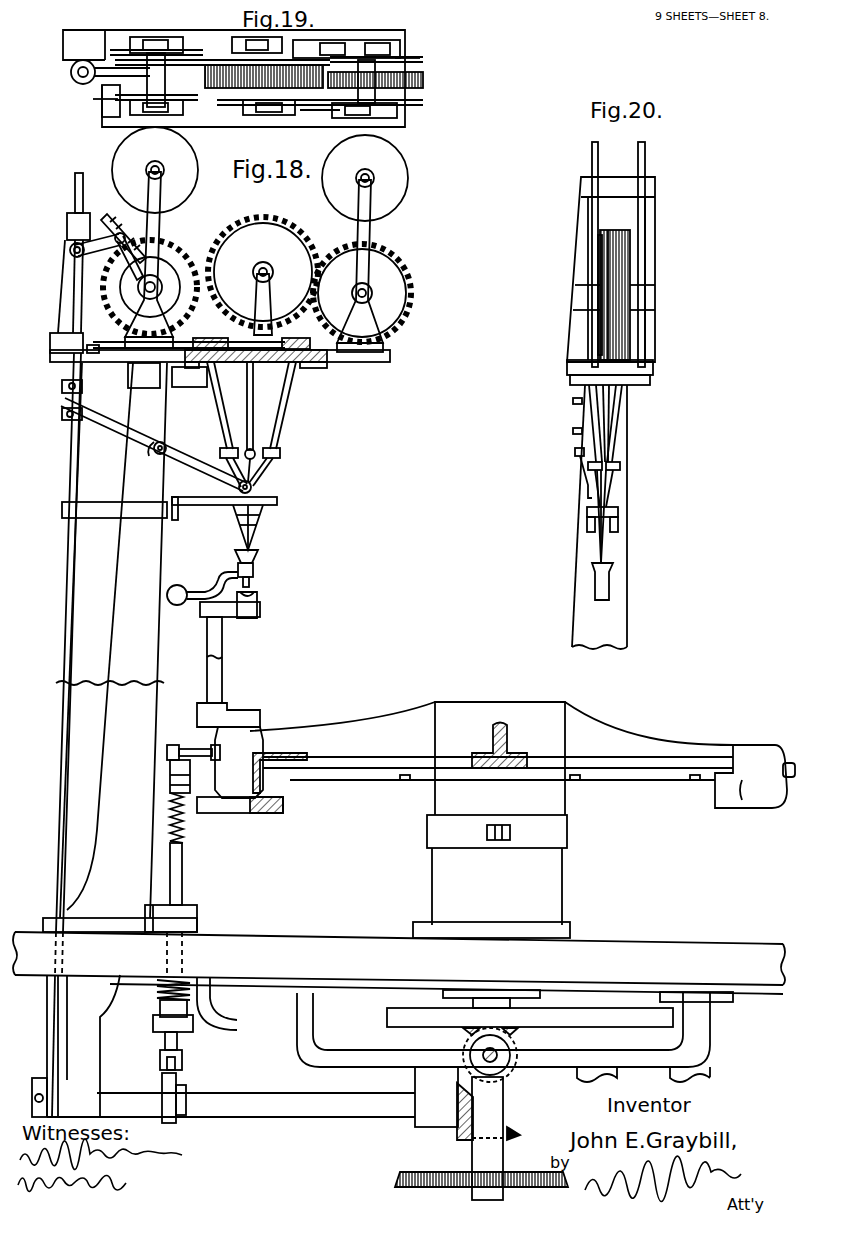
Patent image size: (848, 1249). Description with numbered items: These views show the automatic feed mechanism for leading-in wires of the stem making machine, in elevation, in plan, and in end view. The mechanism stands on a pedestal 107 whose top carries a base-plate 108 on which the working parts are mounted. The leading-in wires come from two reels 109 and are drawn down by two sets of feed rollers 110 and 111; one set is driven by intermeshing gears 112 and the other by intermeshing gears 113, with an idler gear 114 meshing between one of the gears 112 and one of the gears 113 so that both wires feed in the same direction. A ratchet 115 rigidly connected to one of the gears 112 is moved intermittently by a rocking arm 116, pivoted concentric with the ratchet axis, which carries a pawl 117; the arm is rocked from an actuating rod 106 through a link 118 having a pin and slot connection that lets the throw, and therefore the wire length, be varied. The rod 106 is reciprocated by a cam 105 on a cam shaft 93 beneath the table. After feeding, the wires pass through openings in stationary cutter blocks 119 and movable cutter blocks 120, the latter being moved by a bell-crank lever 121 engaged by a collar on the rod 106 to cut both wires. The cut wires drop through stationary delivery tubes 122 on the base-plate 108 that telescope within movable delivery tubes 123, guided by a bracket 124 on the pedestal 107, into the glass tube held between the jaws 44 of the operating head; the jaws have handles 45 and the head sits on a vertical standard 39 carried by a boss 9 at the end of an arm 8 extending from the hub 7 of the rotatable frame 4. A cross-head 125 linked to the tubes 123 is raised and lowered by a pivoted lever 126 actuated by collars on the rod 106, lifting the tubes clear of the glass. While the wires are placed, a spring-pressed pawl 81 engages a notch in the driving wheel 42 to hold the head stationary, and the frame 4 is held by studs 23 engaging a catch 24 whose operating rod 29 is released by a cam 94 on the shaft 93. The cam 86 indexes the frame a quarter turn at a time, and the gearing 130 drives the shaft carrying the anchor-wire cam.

In FIG. 18, the rotatable frame 4 is at (572, 704).
In FIG. 18, the hub 7 is at (531, 720).
In FIG. 18, the spokes or arms 8 is at (343, 734).
In FIG. 18, the boss 9 is at (225, 778).
In FIG. 18, the radially extending studs 23 is at (200, 747).
In FIG. 18, the catch 24 is at (190, 767).
In FIG. 18, the operating rod 29 is at (182, 873).
In FIG. 18, the vertical standard 39 is at (208, 637).
In FIG. 18, the driving wheel 42 is at (219, 806).
In FIG. 18, the jaws 44 is at (256, 568).
In FIG. 18, the handle 45 is at (185, 592).
In FIG. 18, the spring-pressed pawl 81 is at (282, 788).
In FIG. 18, the cam 86 is at (594, 1019).
In FIG. 18, the cam shaft 93 is at (258, 1101).
In FIG. 18, the cam 94 is at (177, 1086).
In FIG. 18, the cam 105 is at (48, 1015).
In FIG. 18, the actuating rod 106 is at (67, 471).
In FIG. 20, the pedestal 107 is at (599, 517).
In FIG. 18, the pedestal 107 is at (125, 647).
In FIG. 20, the base-plate 108 is at (654, 368).
In FIG. 18, the base-plate 108 is at (368, 363).
In FIG. 19, the reels 109 is at (405, 59).
In FIG. 20, the reels 109 is at (645, 170).
In FIG. 18, the reels 109 is at (117, 158).
In FIG. 19, the feed rollers 110 is at (216, 62).
In FIG. 20, the feed rollers 110 is at (632, 272).
In FIG. 19, the feed rollers 111 is at (325, 112).
In FIG. 20, the feed rollers 111 is at (598, 330).
In FIG. 18, the intermeshing gears 112 is at (212, 238).
In FIG. 18, the intermeshing gears 113 is at (307, 250).
In FIG. 19, the idler gear 114 is at (318, 75).
In FIG. 18, the ratchet 115 is at (130, 305).
In FIG. 18, the rocking arm 116 is at (113, 222).
In FIG. 18, the pawl 117 is at (133, 245).
In FIG. 18, the link 118 is at (105, 255).
In FIG. 18, the stationary cutter blocks 119 is at (214, 340).
In FIG. 18, the movable cutter blocks 120 is at (191, 364).
In FIG. 18, the bell-crank lever 121 is at (93, 356).
In FIG. 20, the stationary delivery guides or tubes 122 is at (592, 410).
In FIG. 18, the stationary delivery guides or tubes 122 is at (219, 416).
In FIG. 20, the movable delivery tubes 123 is at (598, 545).
In FIG. 18, the movable delivery tubes 123 is at (240, 515).
In FIG. 20, the bracket 124 is at (618, 512).
In FIG. 18, the bracket 124 is at (278, 502).
In FIG. 18, the cross-head 125 is at (253, 471).
In FIG. 20, the pivoted lever 126 is at (575, 452).
In FIG. 18, the pivoted lever 126 is at (125, 432).
In FIG. 18, the gearing 130 is at (415, 1174).